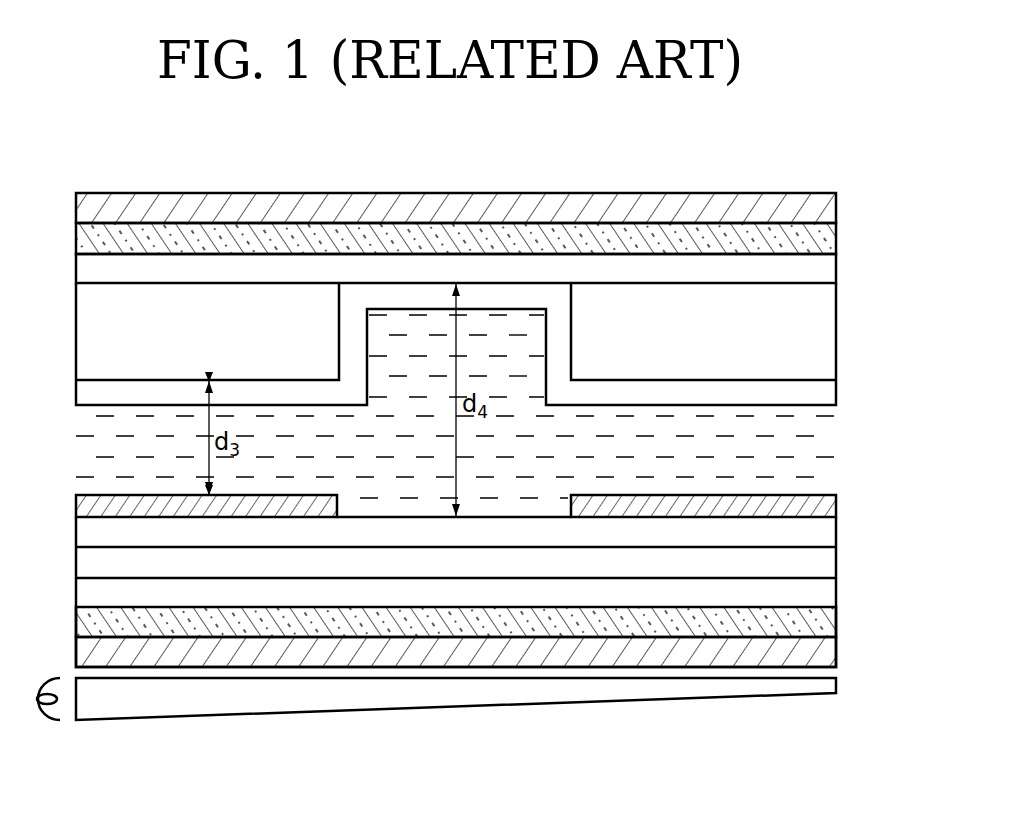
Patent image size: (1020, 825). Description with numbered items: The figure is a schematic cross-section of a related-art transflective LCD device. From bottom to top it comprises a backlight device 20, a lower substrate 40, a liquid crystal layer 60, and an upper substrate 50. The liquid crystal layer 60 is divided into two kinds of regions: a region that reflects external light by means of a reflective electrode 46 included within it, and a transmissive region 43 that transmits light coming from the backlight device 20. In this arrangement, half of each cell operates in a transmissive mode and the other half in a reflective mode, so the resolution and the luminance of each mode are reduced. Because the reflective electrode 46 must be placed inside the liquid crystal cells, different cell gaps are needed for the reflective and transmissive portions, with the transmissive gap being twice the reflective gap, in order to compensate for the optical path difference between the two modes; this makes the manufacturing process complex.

The upper substrate 50 is at (841, 193).
The liquid crystal layer 60 is at (841, 412).
The lower substrate 40 is at (484, 545).
The backlight device 20 is at (836, 685).
The reflective electrode 46 is at (702, 498).
The transmissive region 43 is at (500, 505).